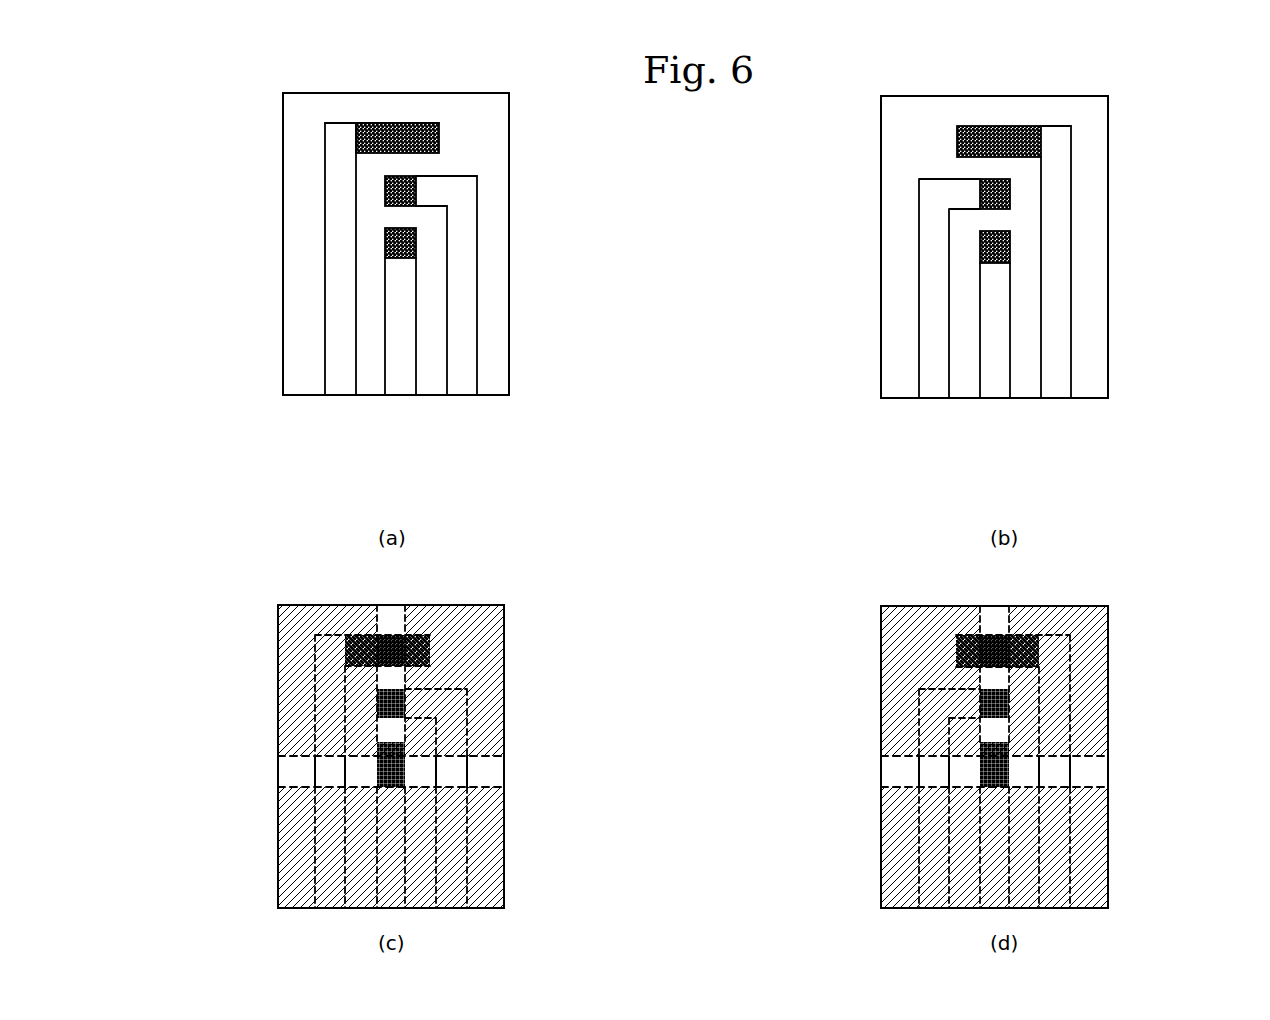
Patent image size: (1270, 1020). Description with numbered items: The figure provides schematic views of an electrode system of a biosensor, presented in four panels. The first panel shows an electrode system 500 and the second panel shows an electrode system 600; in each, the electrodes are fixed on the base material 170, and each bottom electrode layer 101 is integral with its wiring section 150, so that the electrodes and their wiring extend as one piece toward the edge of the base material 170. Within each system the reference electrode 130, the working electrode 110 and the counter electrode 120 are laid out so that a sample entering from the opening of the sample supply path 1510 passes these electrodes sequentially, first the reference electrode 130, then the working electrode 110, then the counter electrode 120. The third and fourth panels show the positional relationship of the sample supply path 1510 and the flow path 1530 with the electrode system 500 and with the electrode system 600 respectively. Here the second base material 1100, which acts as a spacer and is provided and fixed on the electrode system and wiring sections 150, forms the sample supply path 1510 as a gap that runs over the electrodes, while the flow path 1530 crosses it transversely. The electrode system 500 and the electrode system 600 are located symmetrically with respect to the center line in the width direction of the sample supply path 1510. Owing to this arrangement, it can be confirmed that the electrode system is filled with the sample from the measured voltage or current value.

The bottom electrode layer 101 is at (1070, 433).
The working electrode 110 is at (408, 198).
The counter electrode 120 is at (408, 248).
The reference electrode 130 is at (409, 143).
The wiring section 150 is at (504, 463).
The base material 170 is at (497, 361).
The electrode system 500 is at (578, 112).
The electrode system 600 is at (1172, 113).
The second base material 1100 is at (303, 650).
The sample supply path 1510 is at (392, 617).
The flow path 1530 is at (289, 770).